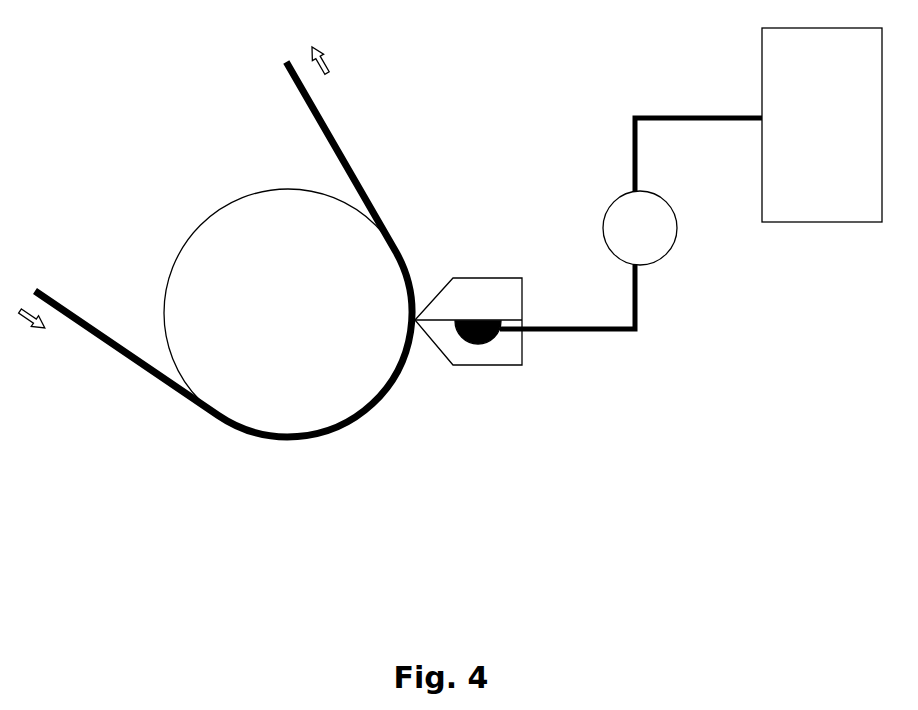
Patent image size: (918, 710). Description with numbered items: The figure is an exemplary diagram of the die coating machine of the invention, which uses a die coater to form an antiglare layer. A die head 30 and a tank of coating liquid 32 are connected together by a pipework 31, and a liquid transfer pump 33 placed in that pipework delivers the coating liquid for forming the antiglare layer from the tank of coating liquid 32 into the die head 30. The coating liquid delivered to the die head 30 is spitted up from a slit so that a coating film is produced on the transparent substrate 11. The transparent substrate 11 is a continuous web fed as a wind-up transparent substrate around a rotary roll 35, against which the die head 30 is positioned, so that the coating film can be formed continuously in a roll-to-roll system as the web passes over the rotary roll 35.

The transparent substrate 11 is at (125, 356).
The die head 30 is at (498, 350).
The pipework 31 is at (638, 317).
The tank of coating liquid 32 is at (812, 177).
The liquid transfer pump 33 is at (617, 242).
The rotary roll 35 is at (287, 380).